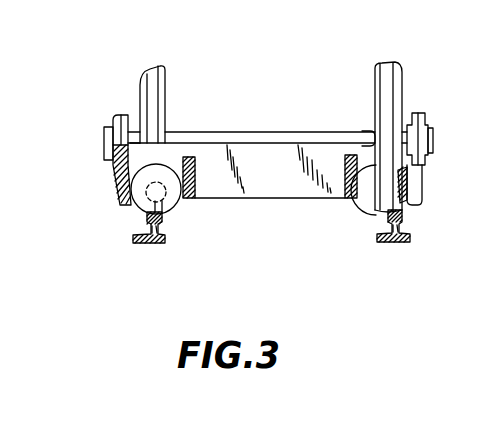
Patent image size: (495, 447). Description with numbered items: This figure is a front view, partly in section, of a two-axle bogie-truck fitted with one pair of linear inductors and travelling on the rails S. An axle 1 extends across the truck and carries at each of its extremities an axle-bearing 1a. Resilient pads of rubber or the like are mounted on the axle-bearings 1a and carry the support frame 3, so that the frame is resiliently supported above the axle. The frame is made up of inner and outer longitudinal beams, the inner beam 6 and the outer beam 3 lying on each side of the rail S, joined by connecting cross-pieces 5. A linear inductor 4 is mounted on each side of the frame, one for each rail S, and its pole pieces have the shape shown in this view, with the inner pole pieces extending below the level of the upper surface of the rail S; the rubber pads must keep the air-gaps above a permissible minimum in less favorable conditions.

The axle 1 is at (279, 132).
The axle-bearing 1a is at (110, 143).
The support frame 3 is at (108, 114).
The linear inductor 4 is at (175, 213).
The cross-piece 5 is at (236, 200).
The inner longitudinal beam 6 is at (187, 157).
The rail S is at (146, 221).